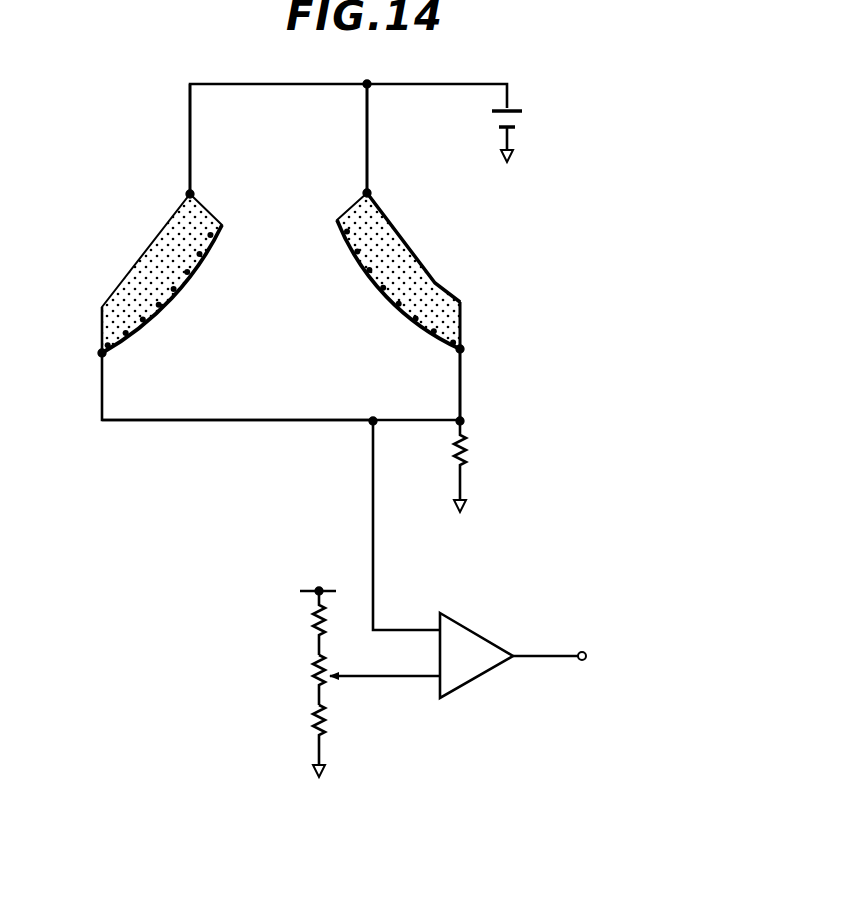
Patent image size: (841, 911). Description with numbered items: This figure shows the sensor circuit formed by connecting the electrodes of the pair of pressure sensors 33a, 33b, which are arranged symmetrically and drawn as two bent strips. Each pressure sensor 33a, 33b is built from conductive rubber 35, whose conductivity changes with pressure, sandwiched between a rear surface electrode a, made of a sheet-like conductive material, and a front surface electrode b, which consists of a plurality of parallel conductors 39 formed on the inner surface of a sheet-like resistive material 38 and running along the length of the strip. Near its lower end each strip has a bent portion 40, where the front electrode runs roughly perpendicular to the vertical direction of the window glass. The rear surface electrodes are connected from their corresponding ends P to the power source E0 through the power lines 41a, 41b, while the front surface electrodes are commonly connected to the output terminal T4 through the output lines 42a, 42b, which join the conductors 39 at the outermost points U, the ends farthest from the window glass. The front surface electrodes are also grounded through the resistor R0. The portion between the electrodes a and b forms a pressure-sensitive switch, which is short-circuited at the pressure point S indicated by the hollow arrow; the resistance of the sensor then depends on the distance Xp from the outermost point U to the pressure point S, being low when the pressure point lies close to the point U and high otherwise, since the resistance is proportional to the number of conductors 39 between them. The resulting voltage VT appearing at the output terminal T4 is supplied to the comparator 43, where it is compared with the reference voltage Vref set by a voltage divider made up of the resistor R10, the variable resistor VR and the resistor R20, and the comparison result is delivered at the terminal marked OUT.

The power line 41a is at (366, 128).
The power line 41b is at (189, 107).
The output line 42a is at (462, 395).
The output line 42b is at (168, 423).
The pressure sensor 33a is at (420, 248).
The pressure sensor 33b is at (135, 268).
The conductive rubber 35 is at (133, 305).
The sheet-like resistive material 38 is at (196, 264).
The parallel conductors 39 is at (182, 295).
The bent portion 40 is at (157, 339).
The comparator 43 is at (487, 676).
The power source E0 is at (513, 123).
The resistor R0 is at (469, 484).
The resistor R10 is at (328, 612).
The resistor R20 is at (335, 757).
The variable resistor VR is at (357, 680).
The reference voltage Vref is at (406, 682).
The voltage at output terminal VT is at (371, 482).
The output terminal T4 is at (371, 424).
The end of rear surface electrode P is at (188, 191).
The outermost point U is at (98, 353).
The pressure point S is at (168, 308).
The distance Xp is at (110, 356).
The rear surface electrode a is at (160, 235).
The front surface electrode b is at (213, 248).
The output terminal OUT is at (580, 640).